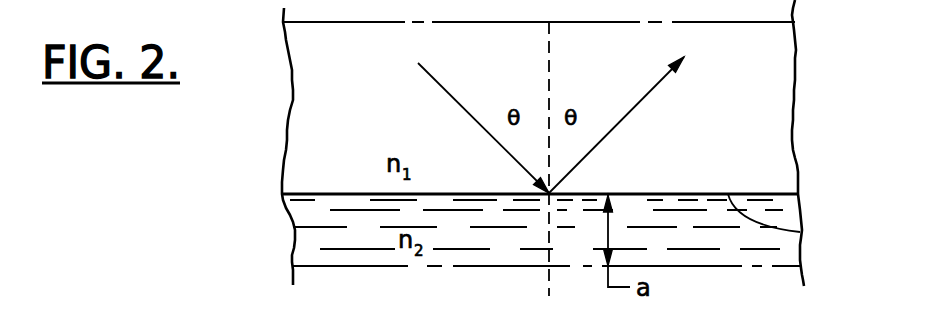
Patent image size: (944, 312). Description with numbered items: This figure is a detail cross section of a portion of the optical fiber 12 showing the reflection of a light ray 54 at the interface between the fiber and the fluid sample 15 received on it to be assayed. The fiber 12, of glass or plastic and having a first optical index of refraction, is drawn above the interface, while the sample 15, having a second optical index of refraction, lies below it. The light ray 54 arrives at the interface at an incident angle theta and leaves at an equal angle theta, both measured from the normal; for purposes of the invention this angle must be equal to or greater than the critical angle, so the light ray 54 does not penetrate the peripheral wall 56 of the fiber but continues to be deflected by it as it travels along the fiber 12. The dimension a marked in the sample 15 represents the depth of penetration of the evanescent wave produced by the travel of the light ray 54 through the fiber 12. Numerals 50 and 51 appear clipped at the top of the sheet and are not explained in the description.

The optical fiber 12 is at (740, 73).
The fluid sample 15 is at (318, 240).
The light ray 54 is at (440, 86).
The peripheral wall 56 is at (800, 232).
The element 50 is at (254, 5).
The element 51 is at (444, 4).